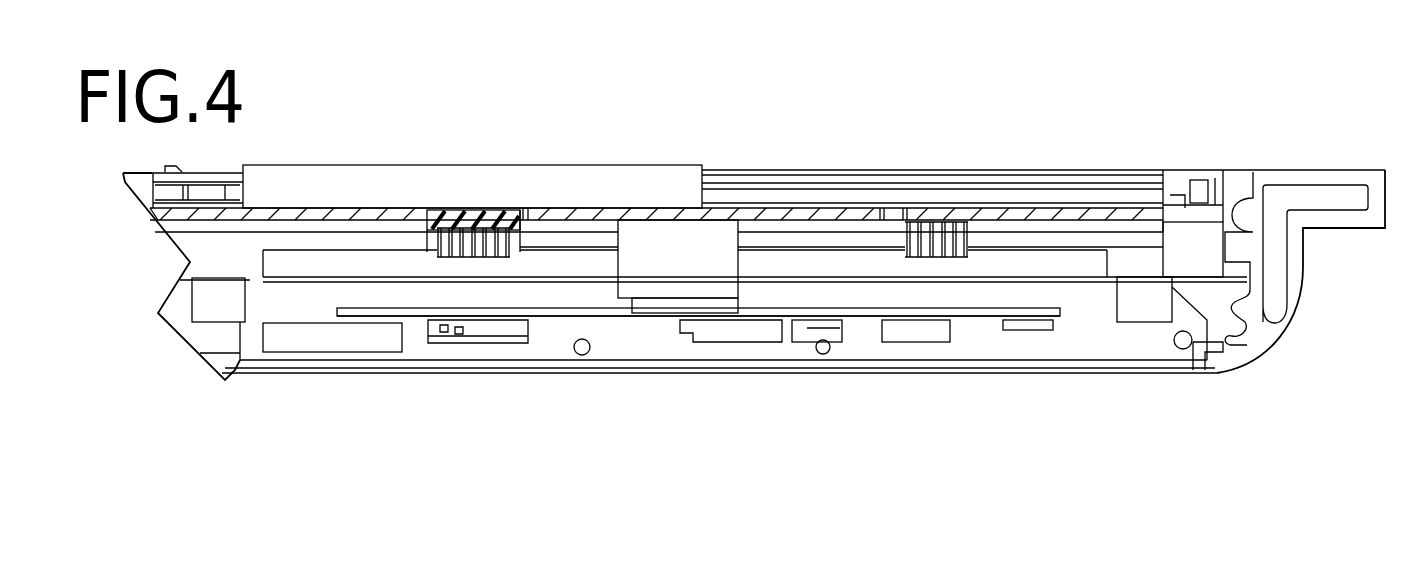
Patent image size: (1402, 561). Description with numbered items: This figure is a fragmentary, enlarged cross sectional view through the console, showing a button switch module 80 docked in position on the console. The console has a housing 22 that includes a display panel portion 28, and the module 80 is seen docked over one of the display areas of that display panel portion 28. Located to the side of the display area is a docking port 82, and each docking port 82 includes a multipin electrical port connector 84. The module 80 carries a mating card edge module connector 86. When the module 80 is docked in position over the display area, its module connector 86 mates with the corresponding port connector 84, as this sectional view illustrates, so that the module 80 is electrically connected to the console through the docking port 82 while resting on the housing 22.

The housing 22 is at (1247, 334).
The display panel portion 28 is at (1277, 182).
The button switch module 80 is at (588, 186).
The docking port 82 is at (523, 213).
The multipin electrical port connector 84 is at (490, 257).
The card edge module connector 86 is at (472, 218).